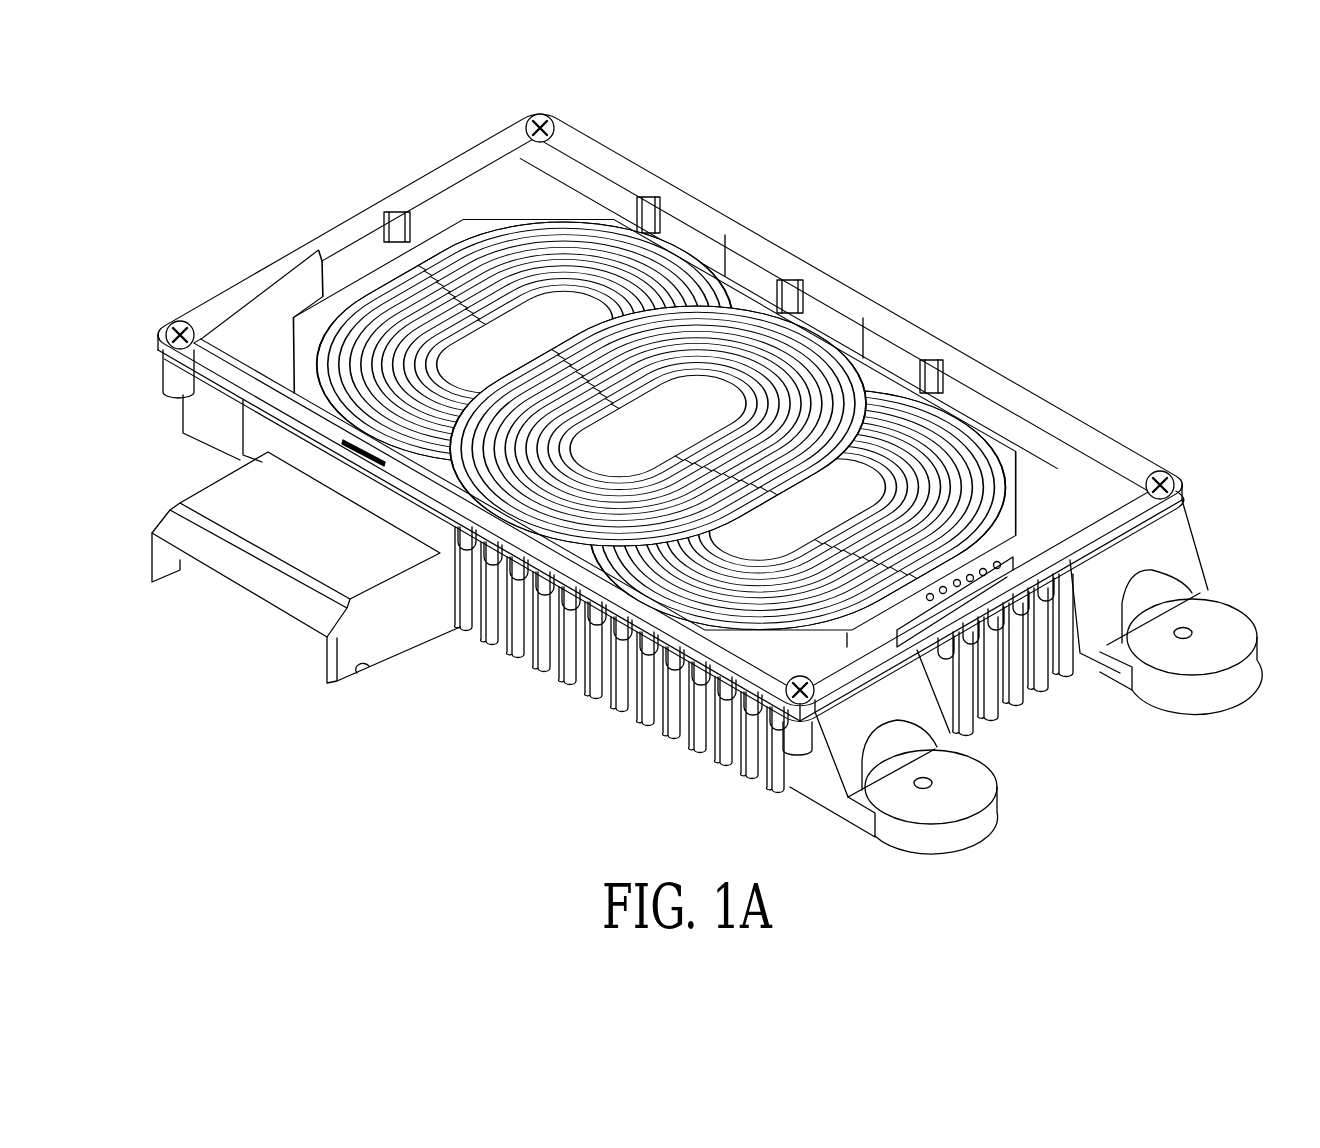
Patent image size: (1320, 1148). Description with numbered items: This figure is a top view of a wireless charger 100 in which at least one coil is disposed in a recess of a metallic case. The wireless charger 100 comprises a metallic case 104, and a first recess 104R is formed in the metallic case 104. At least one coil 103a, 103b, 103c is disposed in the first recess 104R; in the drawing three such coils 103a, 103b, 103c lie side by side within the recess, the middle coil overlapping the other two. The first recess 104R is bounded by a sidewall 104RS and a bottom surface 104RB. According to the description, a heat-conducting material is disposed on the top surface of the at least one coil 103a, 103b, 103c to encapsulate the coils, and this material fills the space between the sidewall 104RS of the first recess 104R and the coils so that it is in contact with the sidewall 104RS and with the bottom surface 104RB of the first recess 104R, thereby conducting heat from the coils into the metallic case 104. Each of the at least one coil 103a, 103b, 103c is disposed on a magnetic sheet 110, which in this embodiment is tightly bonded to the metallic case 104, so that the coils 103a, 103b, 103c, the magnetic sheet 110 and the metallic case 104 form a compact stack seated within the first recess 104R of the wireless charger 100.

The wireless charger 100 is at (705, 461).
The coil 103a is at (400, 295).
The coil 103b is at (582, 358).
The coil 103c is at (942, 438).
The metallic case 104 is at (692, 194).
The first recess 104R is at (1032, 466).
The bottom surface 104RB is at (1062, 508).
The sidewall 104RS is at (1117, 488).
The magnetic sheet 110 is at (843, 500).